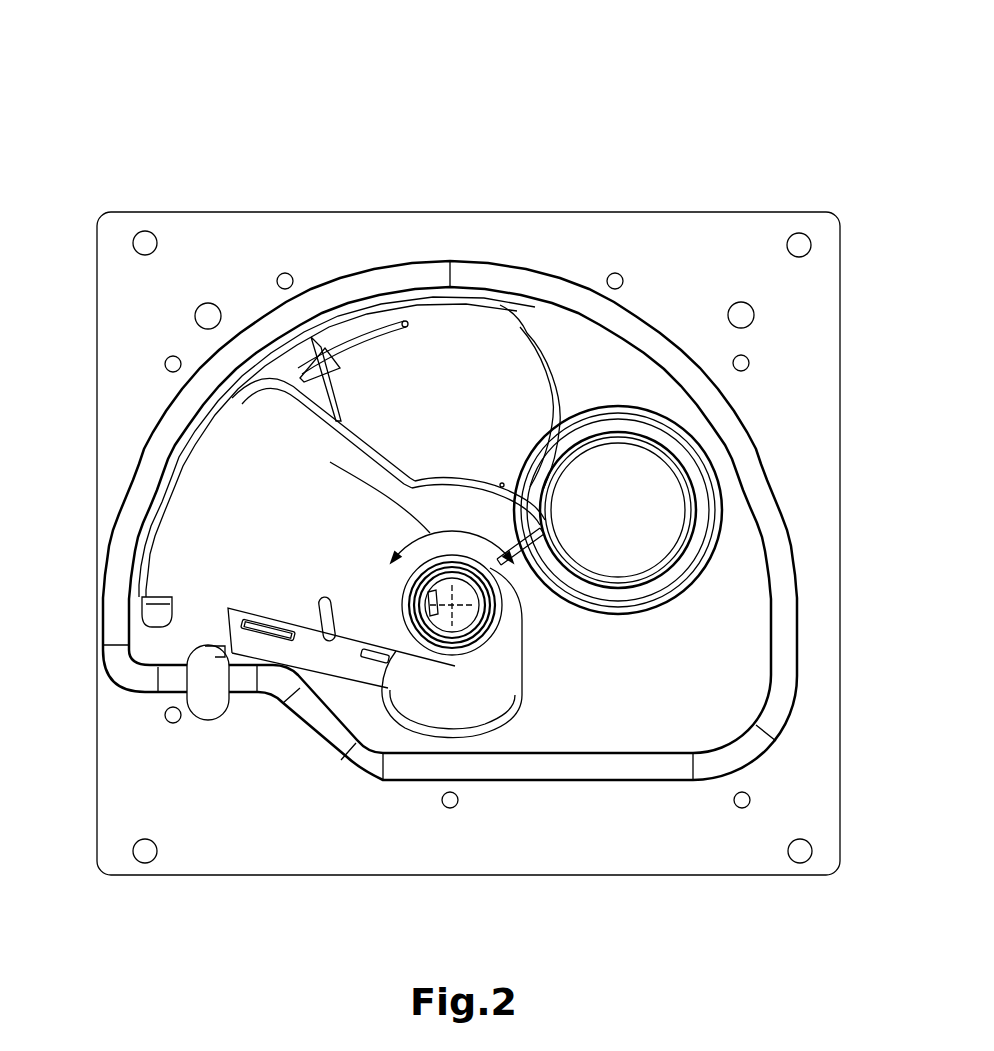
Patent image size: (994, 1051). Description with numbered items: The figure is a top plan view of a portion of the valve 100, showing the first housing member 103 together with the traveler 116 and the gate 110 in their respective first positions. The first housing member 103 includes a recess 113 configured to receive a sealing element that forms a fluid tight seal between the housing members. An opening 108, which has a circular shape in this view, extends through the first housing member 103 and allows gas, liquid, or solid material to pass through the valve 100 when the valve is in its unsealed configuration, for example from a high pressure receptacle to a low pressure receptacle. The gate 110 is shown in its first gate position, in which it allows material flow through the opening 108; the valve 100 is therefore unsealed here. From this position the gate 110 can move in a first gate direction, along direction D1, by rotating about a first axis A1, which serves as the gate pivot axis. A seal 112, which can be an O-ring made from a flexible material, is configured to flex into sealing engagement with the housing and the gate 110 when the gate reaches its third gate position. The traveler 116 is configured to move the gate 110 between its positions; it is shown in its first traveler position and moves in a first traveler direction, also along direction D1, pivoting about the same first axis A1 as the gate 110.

The valve 100 is at (185, 143).
The first housing member 103 is at (137, 765).
The opening 108 is at (638, 490).
The gate 110 is at (495, 372).
The seal 112 is at (707, 548).
The recess 113 is at (735, 753).
The traveler 116 is at (300, 535).
The direction D1 is at (330, 462).
The first axis A1 is at (452, 606).